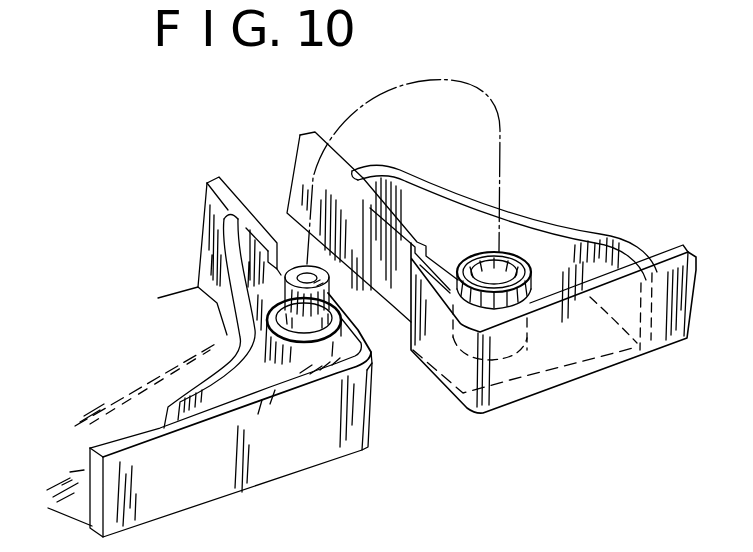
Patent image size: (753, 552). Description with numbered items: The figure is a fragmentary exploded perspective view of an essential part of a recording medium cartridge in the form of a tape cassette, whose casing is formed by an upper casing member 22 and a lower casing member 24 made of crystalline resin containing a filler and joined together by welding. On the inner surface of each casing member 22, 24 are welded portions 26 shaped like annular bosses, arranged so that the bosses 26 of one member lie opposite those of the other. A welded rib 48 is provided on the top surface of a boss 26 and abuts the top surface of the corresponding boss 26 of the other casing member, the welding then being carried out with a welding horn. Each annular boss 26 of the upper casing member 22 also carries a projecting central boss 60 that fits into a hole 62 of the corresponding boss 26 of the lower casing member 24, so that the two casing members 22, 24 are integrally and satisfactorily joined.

The upper casing member 22 is at (368, 412).
The lower casing member 24 is at (491, 292).
The welded portion 26 is at (292, 370).
The welded rib 48 is at (520, 257).
The central boss 60 is at (333, 297).
The hole 62 is at (488, 252).